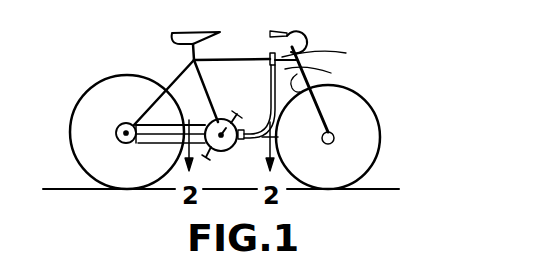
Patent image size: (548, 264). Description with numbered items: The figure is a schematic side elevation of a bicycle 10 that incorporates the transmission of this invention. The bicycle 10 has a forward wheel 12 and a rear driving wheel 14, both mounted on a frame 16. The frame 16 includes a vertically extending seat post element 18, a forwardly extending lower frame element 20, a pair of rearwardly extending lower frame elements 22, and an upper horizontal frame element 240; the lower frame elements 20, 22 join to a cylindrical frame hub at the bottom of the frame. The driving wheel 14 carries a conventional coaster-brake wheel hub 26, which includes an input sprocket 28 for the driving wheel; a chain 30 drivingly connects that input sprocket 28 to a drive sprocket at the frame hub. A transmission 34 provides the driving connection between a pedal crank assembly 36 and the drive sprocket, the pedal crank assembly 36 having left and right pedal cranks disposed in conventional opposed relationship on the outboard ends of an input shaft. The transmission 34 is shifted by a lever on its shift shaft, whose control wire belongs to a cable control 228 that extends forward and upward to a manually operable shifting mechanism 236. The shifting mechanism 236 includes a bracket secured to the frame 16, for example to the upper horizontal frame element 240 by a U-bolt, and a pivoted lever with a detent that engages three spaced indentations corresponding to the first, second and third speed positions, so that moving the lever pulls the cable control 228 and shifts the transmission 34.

The bicycle 10 is at (470, 85).
The forward wheel 12 is at (381, 131).
The rear driving wheel 14 is at (86, 90).
The frame 16 is at (168, 70).
The seat post element 18 is at (203, 76).
The forwardly extending lower frame element 20 is at (320, 75).
The rearwardly extending lower frame elements 22 is at (130, 145).
The coaster-brake wheel hub 26 is at (105, 127).
The input sprocket 28 is at (118, 137).
The chain 30 is at (160, 144).
The transmission 34 is at (237, 157).
The pedal crank assembly 36 is at (213, 152).
The cable control 228 is at (332, 55).
The shifting mechanism 236 is at (288, 42).
The upper horizontal frame element 240 is at (247, 58).